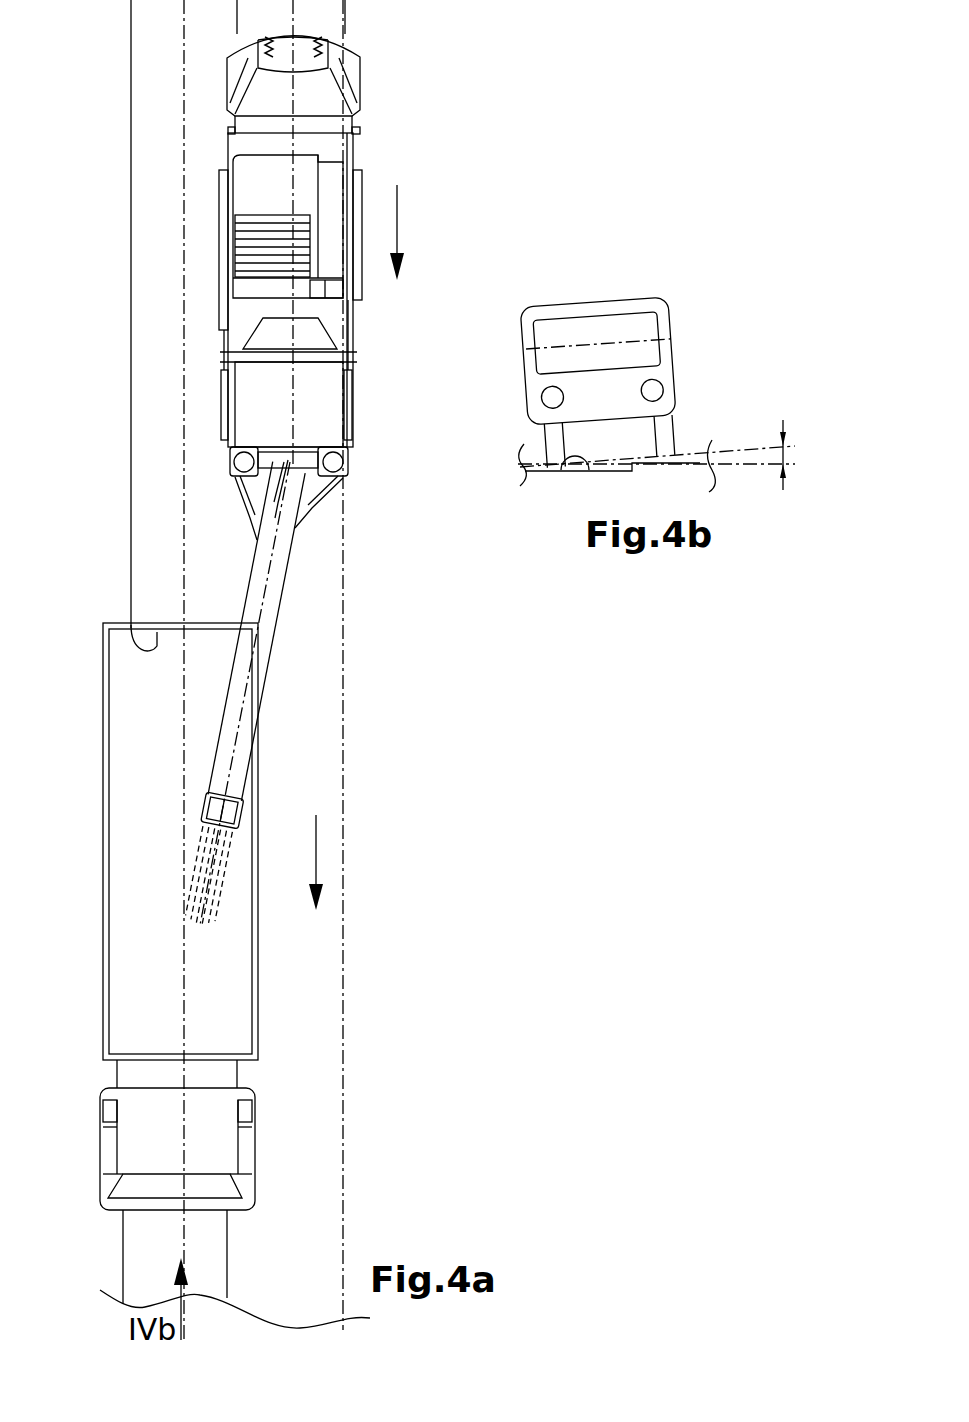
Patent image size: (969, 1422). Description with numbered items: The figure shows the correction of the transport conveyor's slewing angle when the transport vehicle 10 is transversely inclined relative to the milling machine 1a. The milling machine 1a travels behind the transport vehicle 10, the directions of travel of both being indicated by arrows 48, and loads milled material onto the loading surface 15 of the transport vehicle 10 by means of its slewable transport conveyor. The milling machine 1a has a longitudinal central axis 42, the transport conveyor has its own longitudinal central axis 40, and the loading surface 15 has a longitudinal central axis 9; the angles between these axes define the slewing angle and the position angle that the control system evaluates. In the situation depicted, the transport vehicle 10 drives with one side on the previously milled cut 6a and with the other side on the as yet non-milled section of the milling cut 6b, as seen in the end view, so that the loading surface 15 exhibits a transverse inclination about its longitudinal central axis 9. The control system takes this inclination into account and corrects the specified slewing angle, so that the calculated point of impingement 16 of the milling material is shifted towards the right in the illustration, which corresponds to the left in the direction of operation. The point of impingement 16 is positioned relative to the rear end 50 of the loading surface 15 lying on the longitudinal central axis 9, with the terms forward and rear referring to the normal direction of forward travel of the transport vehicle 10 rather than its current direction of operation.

In FIG. 4a, the milling machine 1a is at (198, 270).
In FIG. 4a, the previously milled cut 6a is at (218, 22).
In FIG. 4b, the previously milled cut 6a is at (601, 468).
In FIG. 4a, the as yet non-milled section of the milling cut 6b is at (342, 623).
In FIG. 4b, the as yet non-milled section of the milling cut 6b is at (728, 452).
In FIG. 4a, the longitudinal central axis of the loading surface 9 is at (180, 995).
In FIG. 4a, the transport vehicle 10 is at (188, 652).
In FIG. 4b, the transport vehicle 10 is at (645, 385).
In FIG. 4a, the loading surface 15 is at (167, 805).
In FIG. 4a, the point of impingement 16 is at (196, 911).
In FIG. 4a, the longitudinal central axis of the transport conveyor 40 is at (301, 692).
In FIG. 4a, the longitudinal central axis of the milling machine 42 is at (288, 408).
In FIG. 4a, the arrows 48 is at (397, 232).
In FIG. 4a, the rear end of the loading surface 50 is at (131, 628).